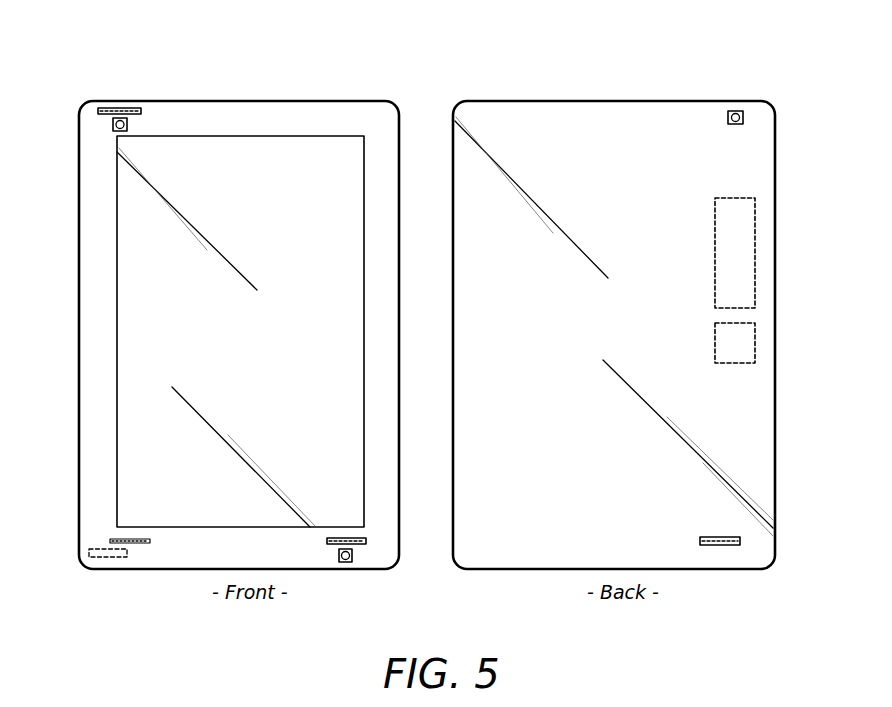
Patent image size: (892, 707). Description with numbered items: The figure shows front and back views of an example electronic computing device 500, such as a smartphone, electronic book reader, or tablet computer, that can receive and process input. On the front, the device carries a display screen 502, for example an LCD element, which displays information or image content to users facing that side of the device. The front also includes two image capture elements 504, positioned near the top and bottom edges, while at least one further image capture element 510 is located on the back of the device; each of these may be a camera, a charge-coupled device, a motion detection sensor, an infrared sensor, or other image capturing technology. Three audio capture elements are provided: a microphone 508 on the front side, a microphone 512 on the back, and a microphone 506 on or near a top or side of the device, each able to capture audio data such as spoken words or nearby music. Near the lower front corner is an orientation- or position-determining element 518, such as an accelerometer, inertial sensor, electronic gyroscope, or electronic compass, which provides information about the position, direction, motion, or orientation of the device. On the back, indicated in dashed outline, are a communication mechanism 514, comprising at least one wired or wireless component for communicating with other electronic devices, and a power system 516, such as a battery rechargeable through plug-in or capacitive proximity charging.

The electronic computing device 500 is at (800, 107).
The display screen 502 is at (117, 249).
The image capture element 504 is at (113, 124).
The microphone 506 is at (128, 108).
The microphone 508 is at (360, 544).
The image capture element 510 is at (735, 111).
The microphone 512 is at (132, 543).
The communication mechanism 514 is at (755, 270).
The power system 516 is at (755, 345).
The orientation- or position-determining element 518 is at (105, 557).